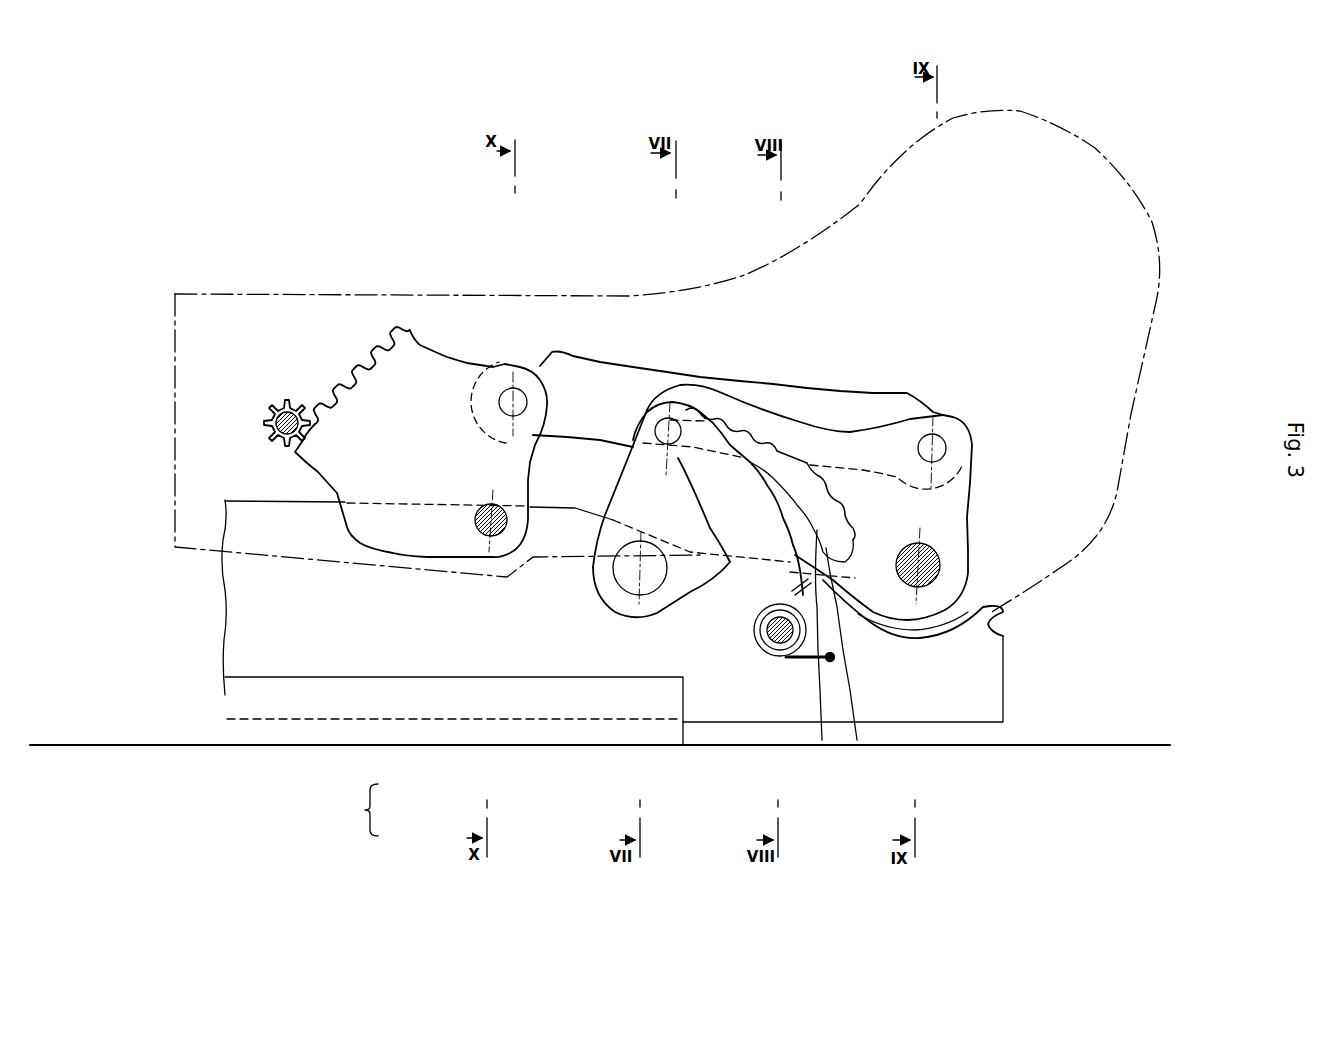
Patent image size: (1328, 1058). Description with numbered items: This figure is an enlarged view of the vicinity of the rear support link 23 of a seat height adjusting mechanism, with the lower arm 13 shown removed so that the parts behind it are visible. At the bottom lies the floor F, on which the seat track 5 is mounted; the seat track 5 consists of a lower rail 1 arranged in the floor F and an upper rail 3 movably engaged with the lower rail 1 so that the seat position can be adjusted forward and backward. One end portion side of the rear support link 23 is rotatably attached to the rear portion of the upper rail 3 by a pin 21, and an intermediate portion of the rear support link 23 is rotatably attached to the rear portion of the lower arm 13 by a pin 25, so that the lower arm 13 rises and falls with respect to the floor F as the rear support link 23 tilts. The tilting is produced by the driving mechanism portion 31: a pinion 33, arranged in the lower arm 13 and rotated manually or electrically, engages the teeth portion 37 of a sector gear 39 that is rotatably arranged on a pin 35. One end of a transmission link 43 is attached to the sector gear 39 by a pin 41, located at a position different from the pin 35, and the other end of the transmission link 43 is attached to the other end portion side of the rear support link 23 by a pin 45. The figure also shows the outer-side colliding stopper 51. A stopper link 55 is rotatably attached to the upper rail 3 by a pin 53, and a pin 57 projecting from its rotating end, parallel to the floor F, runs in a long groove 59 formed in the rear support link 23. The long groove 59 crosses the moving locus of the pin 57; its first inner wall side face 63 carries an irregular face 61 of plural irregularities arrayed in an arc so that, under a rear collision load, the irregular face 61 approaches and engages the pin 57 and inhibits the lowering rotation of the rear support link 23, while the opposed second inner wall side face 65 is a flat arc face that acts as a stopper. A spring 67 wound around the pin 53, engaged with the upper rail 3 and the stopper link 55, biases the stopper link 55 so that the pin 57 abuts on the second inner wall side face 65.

The lower rail 1 is at (430, 732).
The upper rail 3 is at (418, 632).
The seat track 5 is at (361, 810).
The lower arm 13 is at (455, 296).
The pin 21 is at (653, 575).
The rear support link 23 is at (948, 515).
The pin 25 is at (940, 570).
The driving mechanism portion 31 is at (337, 265).
The pinion 33 is at (297, 400).
The pin 35 is at (490, 522).
The teeth portion 37 is at (392, 333).
The sector gear 39 is at (425, 360).
The pin 41 is at (502, 390).
The transmission link 43 is at (655, 392).
The pin 45 is at (940, 452).
The colliding stopper 51 is at (745, 418).
The pin 53 is at (782, 645).
The stopper link 55 is at (730, 562).
The pin 57 is at (665, 418).
The long groove 59 is at (857, 557).
The irregular face 61 is at (792, 450).
The first inner wall side face 63 is at (843, 545).
The second inner wall side face 65 is at (857, 740).
The spring 67 is at (822, 740).
The floor F is at (1075, 743).